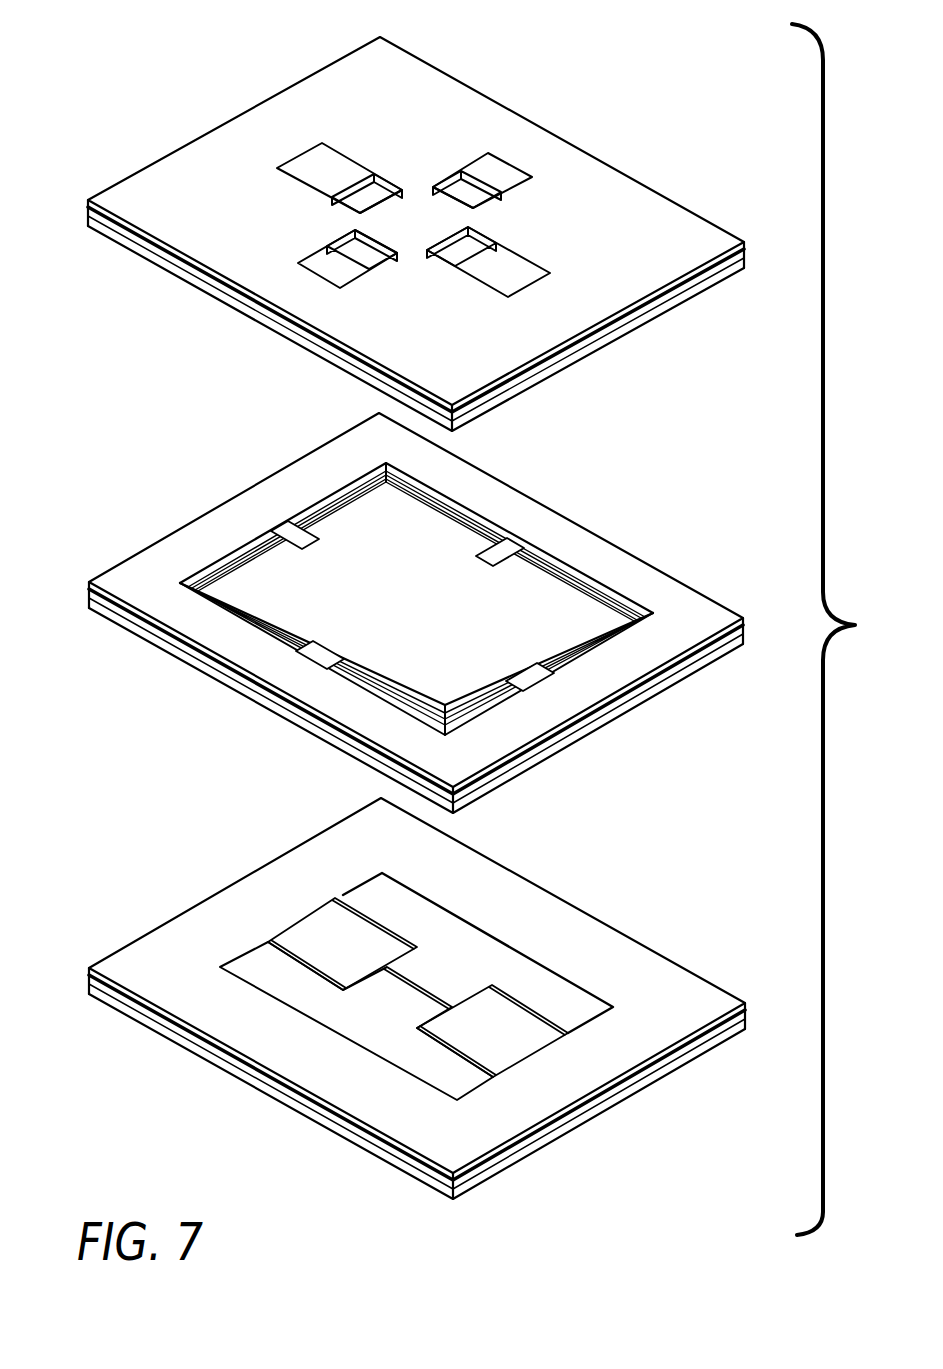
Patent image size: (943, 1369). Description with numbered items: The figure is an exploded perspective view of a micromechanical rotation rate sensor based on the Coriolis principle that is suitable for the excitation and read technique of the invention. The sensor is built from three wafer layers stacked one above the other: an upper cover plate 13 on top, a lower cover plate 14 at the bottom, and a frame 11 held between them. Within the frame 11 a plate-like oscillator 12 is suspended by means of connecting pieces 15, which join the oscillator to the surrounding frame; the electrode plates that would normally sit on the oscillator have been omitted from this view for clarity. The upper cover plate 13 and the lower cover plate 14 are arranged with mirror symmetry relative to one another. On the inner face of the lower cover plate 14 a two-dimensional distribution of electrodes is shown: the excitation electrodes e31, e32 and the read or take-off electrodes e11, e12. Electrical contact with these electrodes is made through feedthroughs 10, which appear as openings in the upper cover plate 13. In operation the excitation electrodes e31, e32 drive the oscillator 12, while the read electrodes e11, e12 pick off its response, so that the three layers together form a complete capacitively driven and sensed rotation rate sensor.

The feedthroughs 10 is at (373, 192).
The frame 11 is at (653, 587).
The plate-like oscillator 12 is at (347, 543).
The upper cover plate 13 is at (642, 202).
The lower cover plate 14 is at (648, 975).
The connecting pieces 15 is at (497, 550).
The read electrode e11 is at (477, 955).
The read electrode e12 is at (363, 1023).
The excitation electrode e31 is at (523, 1038).
The excitation electrode e32 is at (325, 932).